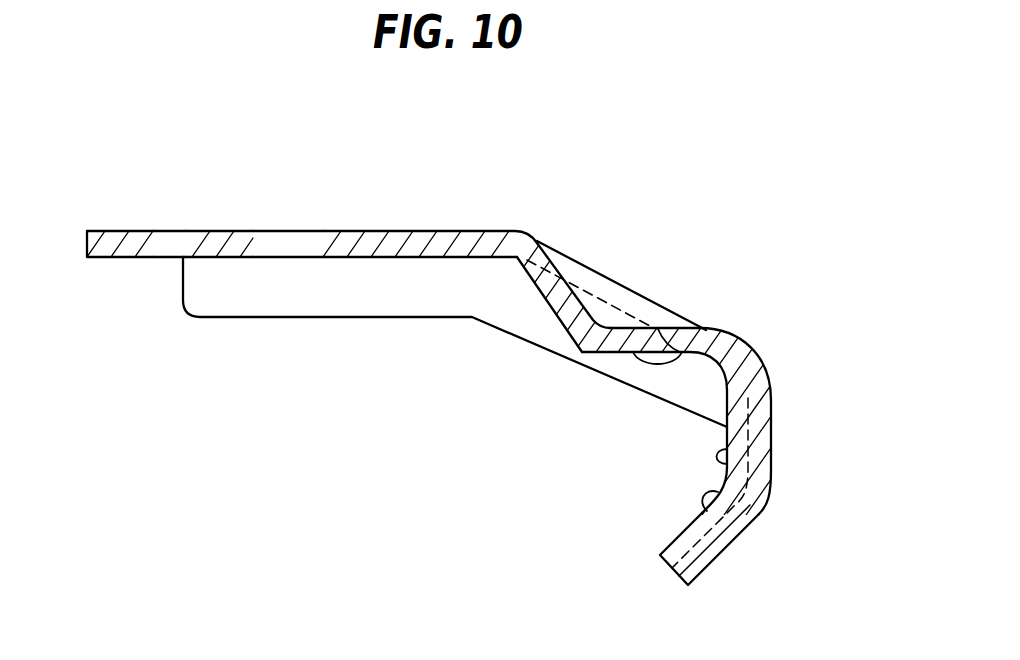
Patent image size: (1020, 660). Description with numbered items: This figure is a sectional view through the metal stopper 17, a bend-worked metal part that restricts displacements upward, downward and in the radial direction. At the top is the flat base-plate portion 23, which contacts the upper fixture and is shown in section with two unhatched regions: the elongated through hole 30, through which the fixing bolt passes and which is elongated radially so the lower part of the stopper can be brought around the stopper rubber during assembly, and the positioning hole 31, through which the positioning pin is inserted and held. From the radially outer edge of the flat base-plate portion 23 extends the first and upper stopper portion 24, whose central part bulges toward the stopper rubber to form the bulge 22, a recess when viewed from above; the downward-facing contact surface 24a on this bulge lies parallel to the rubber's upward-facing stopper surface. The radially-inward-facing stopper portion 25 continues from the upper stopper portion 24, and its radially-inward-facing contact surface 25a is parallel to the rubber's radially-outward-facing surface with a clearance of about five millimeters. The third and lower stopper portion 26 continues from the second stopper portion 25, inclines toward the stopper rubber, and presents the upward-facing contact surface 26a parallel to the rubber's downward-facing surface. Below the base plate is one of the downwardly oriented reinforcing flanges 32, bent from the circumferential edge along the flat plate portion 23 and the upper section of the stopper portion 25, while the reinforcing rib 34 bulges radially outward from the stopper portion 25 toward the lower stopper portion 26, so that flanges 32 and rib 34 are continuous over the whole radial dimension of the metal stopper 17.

The metal stopper 17 is at (577, 179).
The bulge 22 is at (598, 315).
The flat base-plate portion 23 is at (427, 230).
The first and upper stopper portion 24 is at (633, 294).
The downward-facing contact surface 24a is at (660, 329).
The radially-inward-facing stopper portion 25 is at (769, 398).
The radially-inward-facing contact surface 25a is at (720, 462).
The third and lower stopper portion 26 is at (700, 527).
The upward-facing contact surface 26a is at (710, 505).
The elongated through hole 30 is at (295, 238).
The positioning hole 31 is at (171, 240).
The reinforcing flanges 32 is at (349, 295).
The reinforcing rib 34 is at (769, 434).